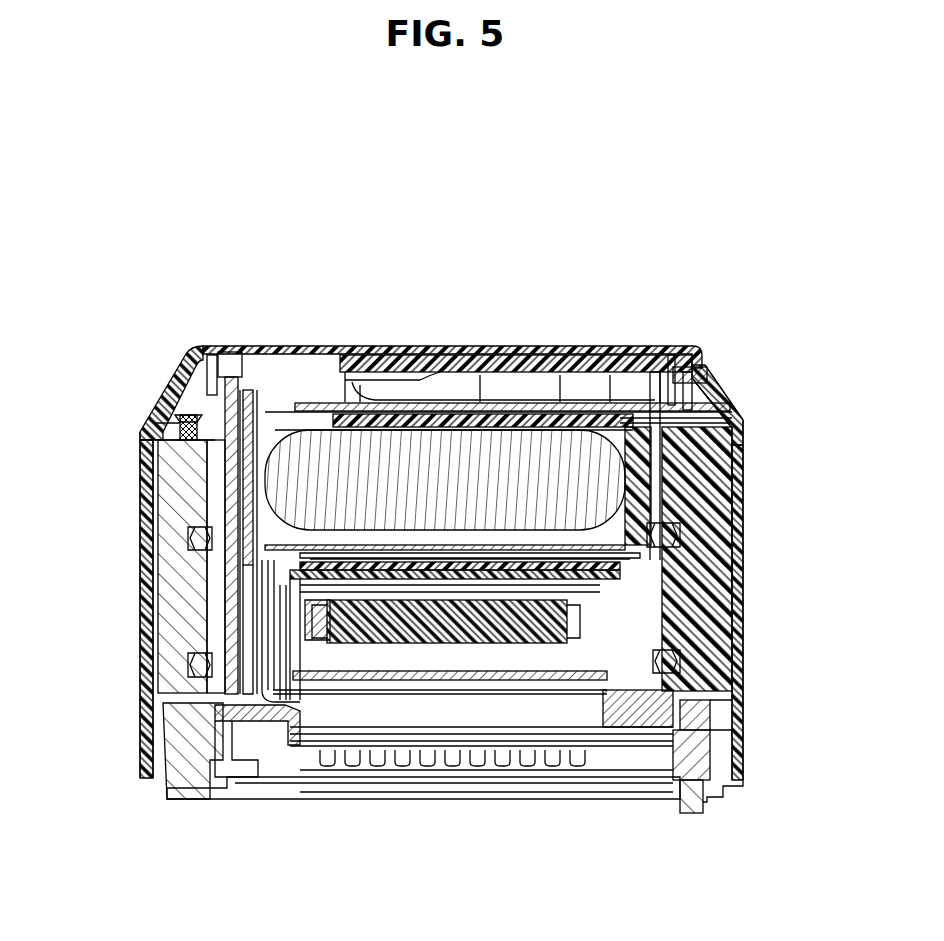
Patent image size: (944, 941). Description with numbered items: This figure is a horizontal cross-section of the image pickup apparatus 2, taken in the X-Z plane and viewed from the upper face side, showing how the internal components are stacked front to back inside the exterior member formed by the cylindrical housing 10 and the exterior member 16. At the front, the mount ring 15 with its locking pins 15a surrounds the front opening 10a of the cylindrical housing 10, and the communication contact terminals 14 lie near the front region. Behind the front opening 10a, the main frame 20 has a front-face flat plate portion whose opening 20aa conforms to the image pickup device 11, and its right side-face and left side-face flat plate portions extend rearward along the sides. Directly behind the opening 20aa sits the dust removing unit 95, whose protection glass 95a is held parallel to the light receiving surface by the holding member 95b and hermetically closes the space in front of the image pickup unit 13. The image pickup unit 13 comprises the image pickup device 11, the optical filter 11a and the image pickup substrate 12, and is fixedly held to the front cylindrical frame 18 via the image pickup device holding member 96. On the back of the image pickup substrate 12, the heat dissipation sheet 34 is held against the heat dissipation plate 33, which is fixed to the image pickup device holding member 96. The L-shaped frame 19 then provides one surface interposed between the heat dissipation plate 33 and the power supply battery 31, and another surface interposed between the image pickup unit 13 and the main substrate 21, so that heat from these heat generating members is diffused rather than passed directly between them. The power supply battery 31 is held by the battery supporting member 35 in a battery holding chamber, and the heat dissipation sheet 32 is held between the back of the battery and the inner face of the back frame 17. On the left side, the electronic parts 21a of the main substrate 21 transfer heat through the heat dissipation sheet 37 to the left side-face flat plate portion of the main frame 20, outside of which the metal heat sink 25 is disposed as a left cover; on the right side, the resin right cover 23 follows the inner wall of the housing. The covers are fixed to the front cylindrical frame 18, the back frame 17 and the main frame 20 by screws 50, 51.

The image pickup apparatus 2 is at (640, 213).
The cylindrical housing 10 is at (760, 733).
The front opening 10a is at (515, 786).
The image pickup device 11 is at (610, 587).
The optical filter 11a is at (570, 622).
The image pickup substrate 12 is at (620, 576).
The image pickup unit 13 is at (812, 545).
The communication contact terminals 14 is at (563, 757).
The mount ring 15 is at (672, 793).
The locking pins 15a is at (697, 800).
The exterior member 16 is at (352, 345).
The back frame 17 is at (400, 372).
The front cylindrical frame 18 is at (190, 799).
The L-shaped frame 19 is at (110, 707).
The main frame 20 is at (165, 473).
The opening 20aa is at (458, 706).
The main substrate 21 is at (237, 370).
The electronic parts 21a is at (250, 398).
The right cover 23 is at (740, 462).
The heat sink 25 is at (183, 458).
The power supply battery 31 is at (537, 440).
The heat dissipation sheet 32 is at (548, 455).
The heat dissipation plate 33 is at (597, 565).
The heat dissipation sheet 34 is at (640, 573).
The battery supporting member 35 is at (740, 438).
The heat dissipation sheet 37 is at (222, 517).
The screw 50 is at (740, 533).
The screw 51 is at (195, 656).
The dust removing unit 95 is at (328, 855).
The protection glass 95a is at (382, 645).
The holding member 95b is at (332, 645).
The image pickup device holding member 96 is at (312, 690).